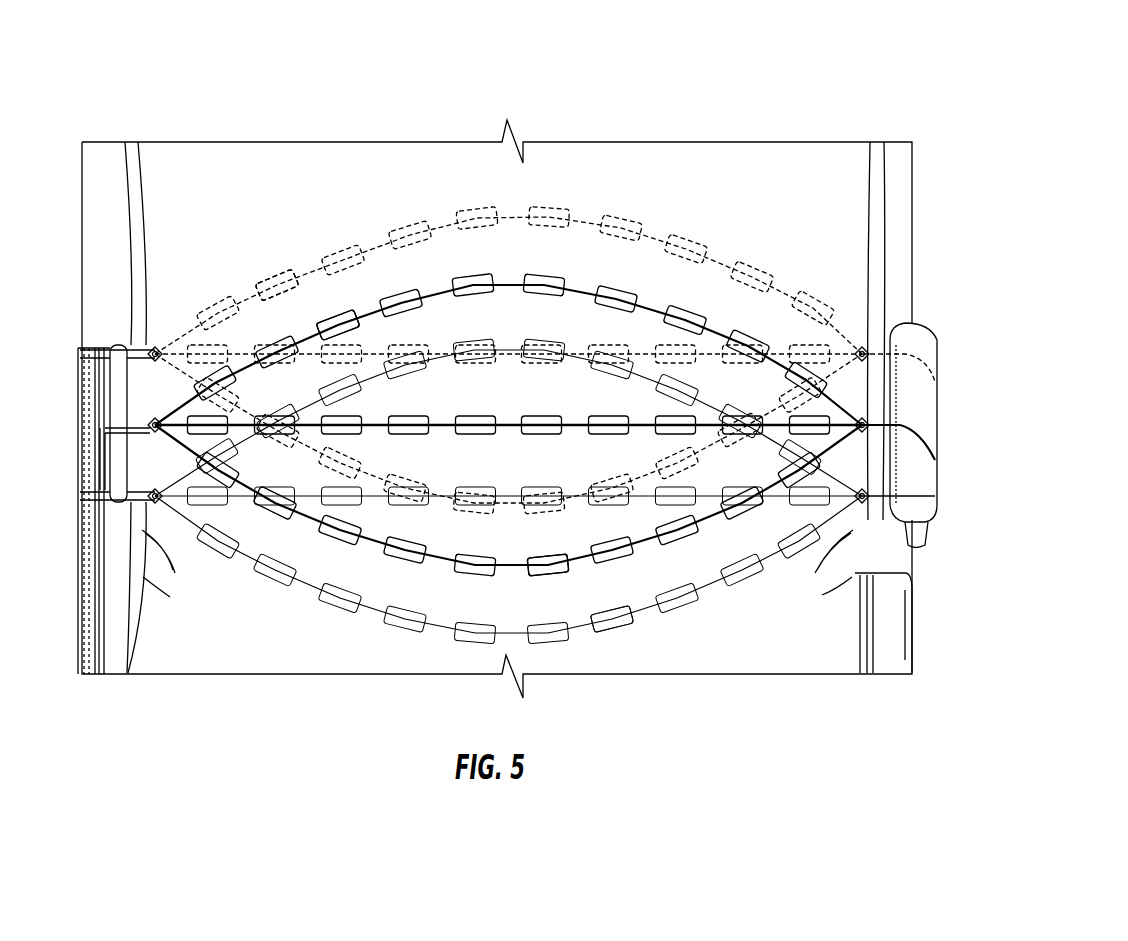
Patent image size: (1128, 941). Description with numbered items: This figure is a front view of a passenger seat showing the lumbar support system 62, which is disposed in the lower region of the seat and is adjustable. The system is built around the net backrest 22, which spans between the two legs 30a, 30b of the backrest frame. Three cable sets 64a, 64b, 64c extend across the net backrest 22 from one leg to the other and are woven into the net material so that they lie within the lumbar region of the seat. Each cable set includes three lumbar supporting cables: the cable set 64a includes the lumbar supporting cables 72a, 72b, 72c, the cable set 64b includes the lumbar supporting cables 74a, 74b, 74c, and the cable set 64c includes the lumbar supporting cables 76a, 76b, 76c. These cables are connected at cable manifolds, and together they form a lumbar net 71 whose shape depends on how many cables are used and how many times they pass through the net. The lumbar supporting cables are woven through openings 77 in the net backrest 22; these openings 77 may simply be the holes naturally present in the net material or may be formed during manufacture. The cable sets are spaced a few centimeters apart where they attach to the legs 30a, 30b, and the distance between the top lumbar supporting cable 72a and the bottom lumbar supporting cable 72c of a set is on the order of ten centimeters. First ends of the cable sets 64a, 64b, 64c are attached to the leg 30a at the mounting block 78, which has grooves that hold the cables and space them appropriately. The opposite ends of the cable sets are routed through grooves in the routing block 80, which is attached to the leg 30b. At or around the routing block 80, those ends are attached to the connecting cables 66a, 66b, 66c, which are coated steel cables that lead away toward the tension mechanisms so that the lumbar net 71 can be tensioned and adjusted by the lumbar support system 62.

The net backrest 22 is at (677, 165).
The leg 30a is at (895, 215).
The leg 30b is at (110, 160).
The lumbar support system 62 is at (840, 90).
The cable set 64a is at (156, 350).
The cable set 64b is at (865, 422).
The cable set 64c is at (153, 502).
The connecting cable 66a is at (131, 288).
The connecting cable 66b is at (93, 522).
The connecting cable 66c is at (93, 622).
The lumbar net 71 is at (770, 242).
The lumbar supporting cable 72a is at (360, 225).
The lumbar supporting cable 72b is at (393, 352).
The lumbar supporting cable 72c is at (653, 495).
The lumbar supporting cable 74a is at (183, 400).
The lumbar supporting cable 74b is at (320, 432).
The lumbar supporting cable 74c is at (362, 540).
The lumbar supporting cable 76a is at (705, 400).
The lumbar supporting cable 76b is at (777, 498).
The lumbar supporting cable 76c is at (835, 518).
The openings 77 is at (333, 320).
The mounting block 78 is at (893, 330).
The routing block 80 is at (113, 437).